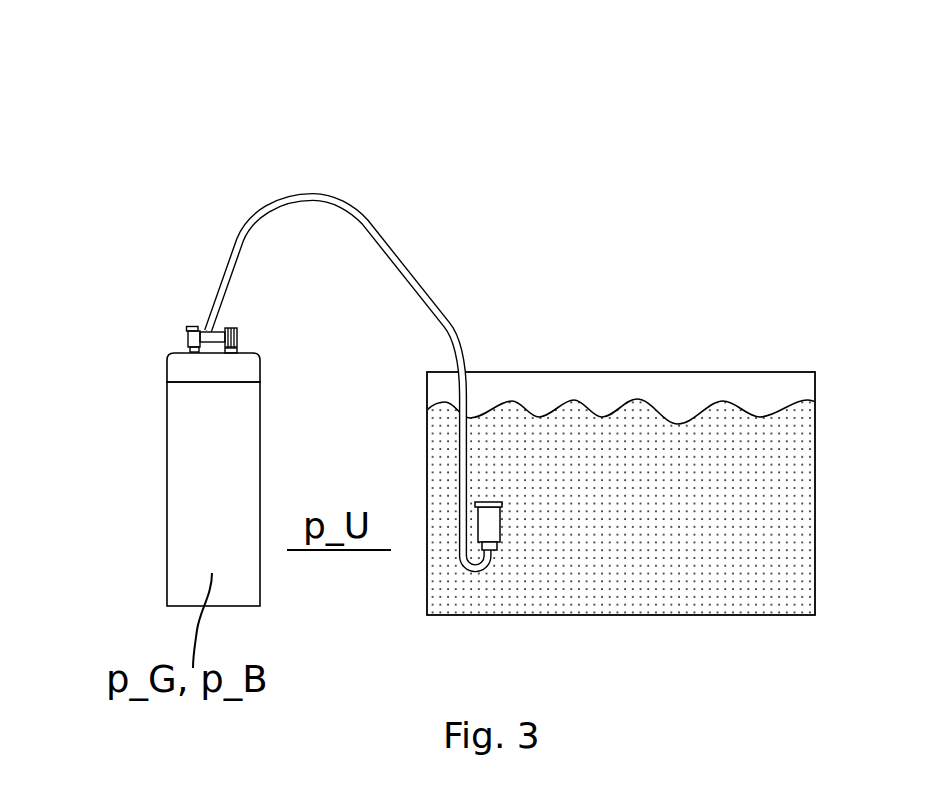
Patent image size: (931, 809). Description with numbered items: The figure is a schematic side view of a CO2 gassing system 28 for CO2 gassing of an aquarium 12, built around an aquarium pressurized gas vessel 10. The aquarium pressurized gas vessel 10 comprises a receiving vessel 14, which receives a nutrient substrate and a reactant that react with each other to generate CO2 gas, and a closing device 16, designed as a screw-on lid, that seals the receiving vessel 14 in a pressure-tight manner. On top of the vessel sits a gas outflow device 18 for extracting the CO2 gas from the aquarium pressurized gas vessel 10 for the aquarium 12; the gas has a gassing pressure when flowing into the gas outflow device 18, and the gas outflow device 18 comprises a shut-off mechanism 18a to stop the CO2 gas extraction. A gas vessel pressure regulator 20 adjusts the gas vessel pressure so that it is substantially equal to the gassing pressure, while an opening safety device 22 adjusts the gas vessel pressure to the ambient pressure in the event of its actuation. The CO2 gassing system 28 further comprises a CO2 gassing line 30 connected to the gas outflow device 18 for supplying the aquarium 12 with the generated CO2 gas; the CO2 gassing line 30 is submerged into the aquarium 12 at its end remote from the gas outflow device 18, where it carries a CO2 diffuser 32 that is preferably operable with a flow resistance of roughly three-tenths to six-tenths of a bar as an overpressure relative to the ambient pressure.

The aquarium pressurized gas vessel 10 is at (231, 156).
The aquarium 12 is at (718, 438).
The receiving vessel 14 is at (198, 495).
The closing device 16 is at (180, 367).
The gas outflow device 18 is at (207, 327).
The shut-off mechanism 18a is at (238, 335).
The gas vessel pressure regulator 20 is at (233, 356).
The opening safety device 22 is at (189, 327).
The CO2 gassing system 28 is at (502, 266).
The CO2 gassing line 30 is at (371, 224).
The CO2 diffuser 32 is at (490, 530).